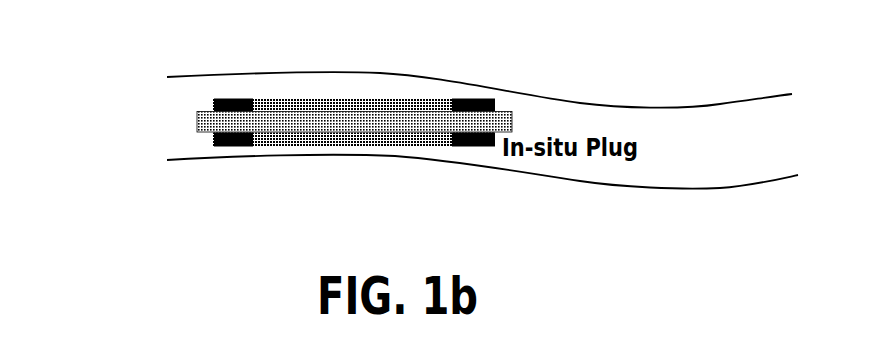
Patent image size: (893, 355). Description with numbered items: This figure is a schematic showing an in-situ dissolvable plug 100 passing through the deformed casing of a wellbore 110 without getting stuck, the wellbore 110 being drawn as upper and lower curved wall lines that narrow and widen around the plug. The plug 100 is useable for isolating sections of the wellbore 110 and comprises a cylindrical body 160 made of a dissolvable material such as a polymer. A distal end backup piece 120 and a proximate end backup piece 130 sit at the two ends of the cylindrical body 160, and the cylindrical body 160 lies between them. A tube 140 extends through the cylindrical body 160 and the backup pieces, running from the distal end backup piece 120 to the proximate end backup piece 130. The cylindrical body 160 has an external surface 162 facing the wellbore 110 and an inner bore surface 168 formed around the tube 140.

The plug 100 is at (379, 73).
The wellbore 110 is at (718, 103).
The distal end backup piece 120 is at (214, 101).
The proximate end backup piece 130 is at (495, 102).
The tube 140 is at (197, 123).
The cylindrical body 160 is at (290, 100).
The external surface 162 is at (355, 145).
The inner bore surface 168 is at (288, 137).